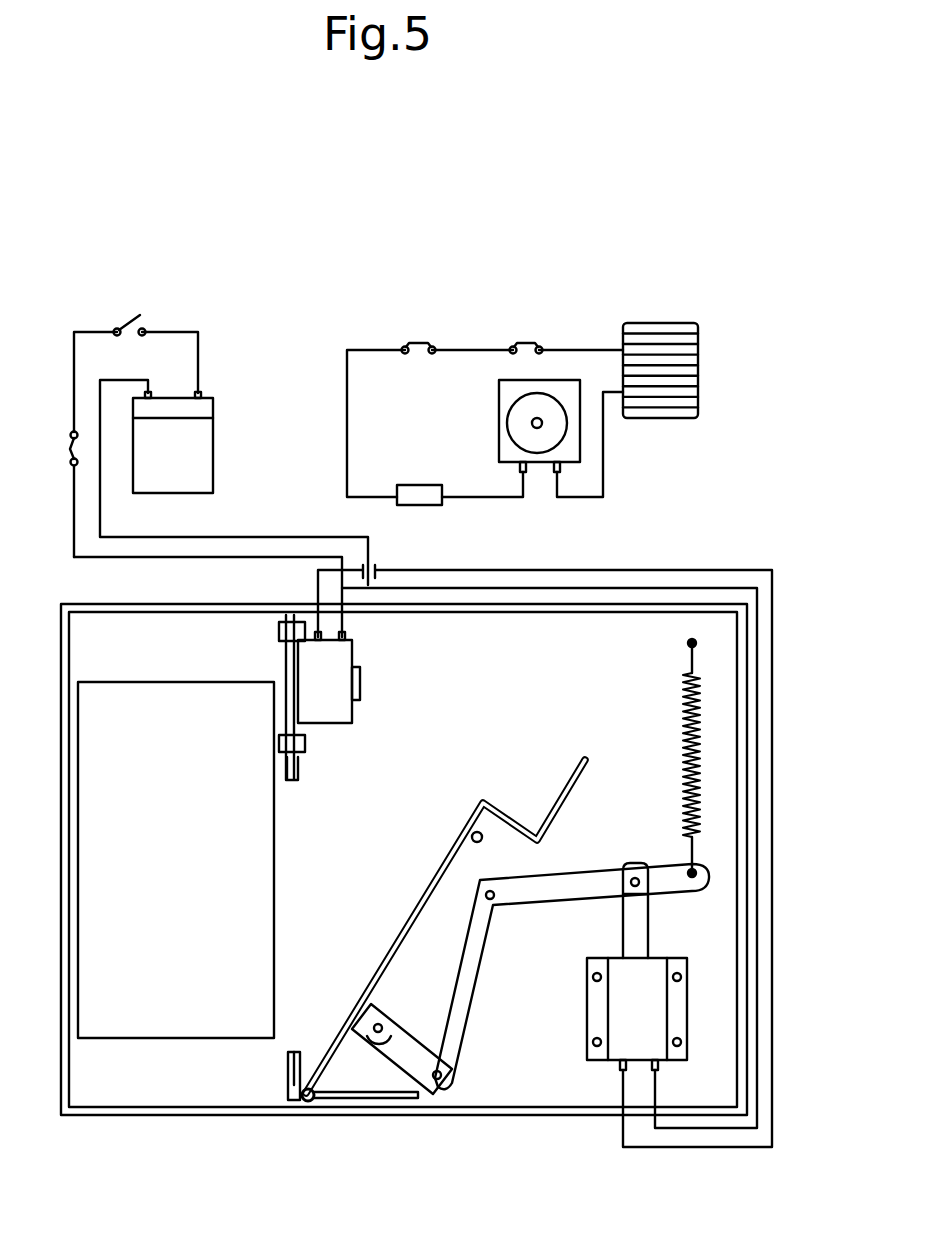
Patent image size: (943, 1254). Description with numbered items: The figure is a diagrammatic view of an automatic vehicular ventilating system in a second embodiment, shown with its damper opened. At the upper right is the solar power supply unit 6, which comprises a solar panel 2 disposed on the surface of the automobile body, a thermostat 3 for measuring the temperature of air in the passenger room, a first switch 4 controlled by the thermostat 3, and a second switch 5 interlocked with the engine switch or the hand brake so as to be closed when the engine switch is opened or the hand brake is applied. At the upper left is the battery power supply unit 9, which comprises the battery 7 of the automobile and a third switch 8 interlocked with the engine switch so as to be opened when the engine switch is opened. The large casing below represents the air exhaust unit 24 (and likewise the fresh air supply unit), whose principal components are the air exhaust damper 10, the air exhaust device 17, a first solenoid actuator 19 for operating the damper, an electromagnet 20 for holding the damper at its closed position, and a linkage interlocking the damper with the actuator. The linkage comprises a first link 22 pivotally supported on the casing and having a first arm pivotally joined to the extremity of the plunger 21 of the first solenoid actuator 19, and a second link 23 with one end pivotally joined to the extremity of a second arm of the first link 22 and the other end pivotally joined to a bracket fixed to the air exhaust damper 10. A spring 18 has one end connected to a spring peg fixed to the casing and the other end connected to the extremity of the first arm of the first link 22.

The solar panel 2 is at (700, 331).
The thermostat 3 is at (428, 505).
The first switch 4 is at (417, 336).
The second switch 5 is at (527, 336).
The solar power supply unit 6 is at (493, 285).
The battery 7 is at (217, 403).
The third switch 8 is at (140, 316).
The battery power supply unit 9 is at (192, 289).
The air exhaust damper 10 is at (455, 833).
The air exhaust device 17 is at (499, 422).
The spring 18 is at (680, 728).
The first solenoid actuator 19 is at (587, 974).
The electromagnet 20 is at (363, 688).
The plunger 21 is at (648, 928).
The first link 22 is at (472, 1003).
The second link 23 is at (403, 1026).
The air exhaust unit 24 is at (830, 517).